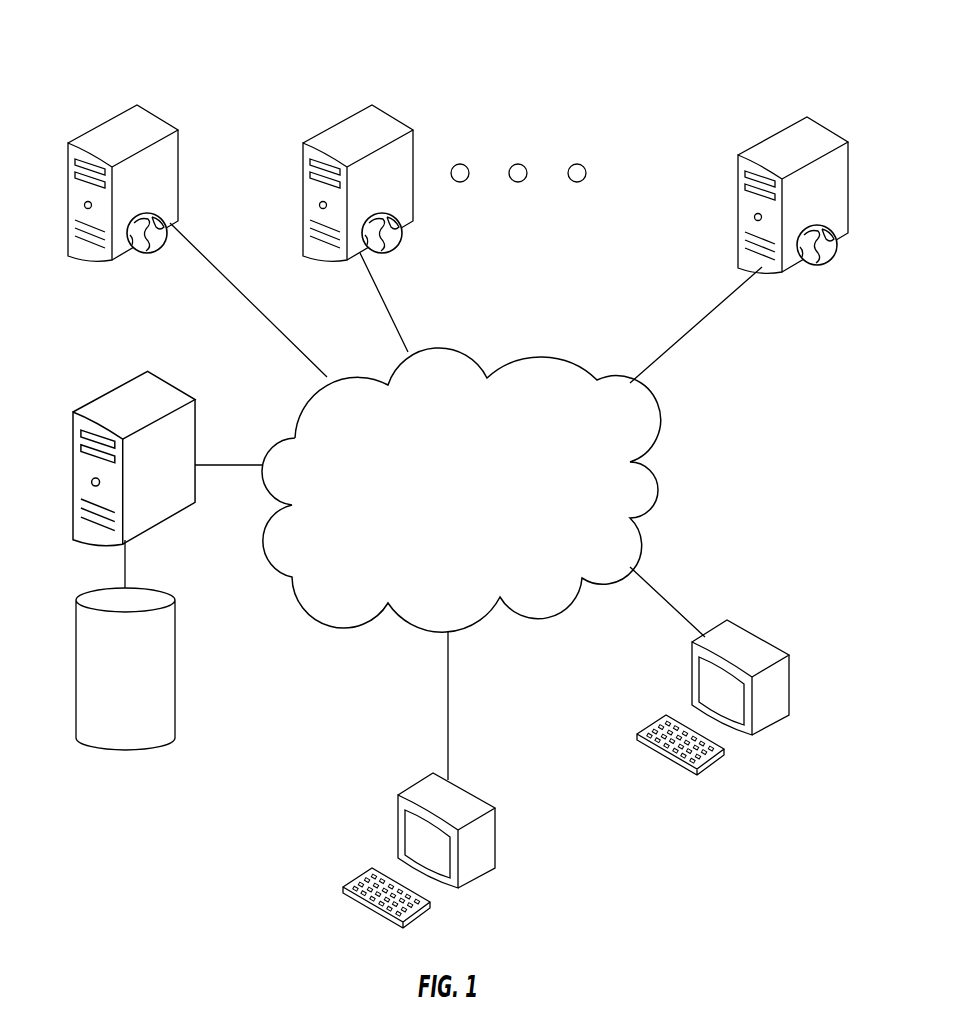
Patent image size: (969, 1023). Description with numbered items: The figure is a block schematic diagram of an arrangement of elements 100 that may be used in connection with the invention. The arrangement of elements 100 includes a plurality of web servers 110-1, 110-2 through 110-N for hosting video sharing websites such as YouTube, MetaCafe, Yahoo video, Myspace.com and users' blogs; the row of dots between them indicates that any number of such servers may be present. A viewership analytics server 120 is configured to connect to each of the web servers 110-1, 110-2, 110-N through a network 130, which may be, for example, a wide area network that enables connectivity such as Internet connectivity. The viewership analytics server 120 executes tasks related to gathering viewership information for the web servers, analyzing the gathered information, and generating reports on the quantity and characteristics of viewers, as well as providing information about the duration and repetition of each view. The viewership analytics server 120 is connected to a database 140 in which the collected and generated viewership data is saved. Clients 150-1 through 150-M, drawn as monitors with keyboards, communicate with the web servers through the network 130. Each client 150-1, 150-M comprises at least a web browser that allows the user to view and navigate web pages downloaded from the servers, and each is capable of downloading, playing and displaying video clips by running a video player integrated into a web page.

The arrangement of elements 100 is at (633, 65).
The web server 110-1 is at (155, 117).
The web server 110-2 is at (390, 117).
The web server 110-N is at (802, 123).
The viewership analytics server 120 is at (152, 373).
The network 130 is at (655, 467).
The database 140 is at (155, 588).
The client 150-1 is at (473, 800).
The client 150-M is at (760, 643).